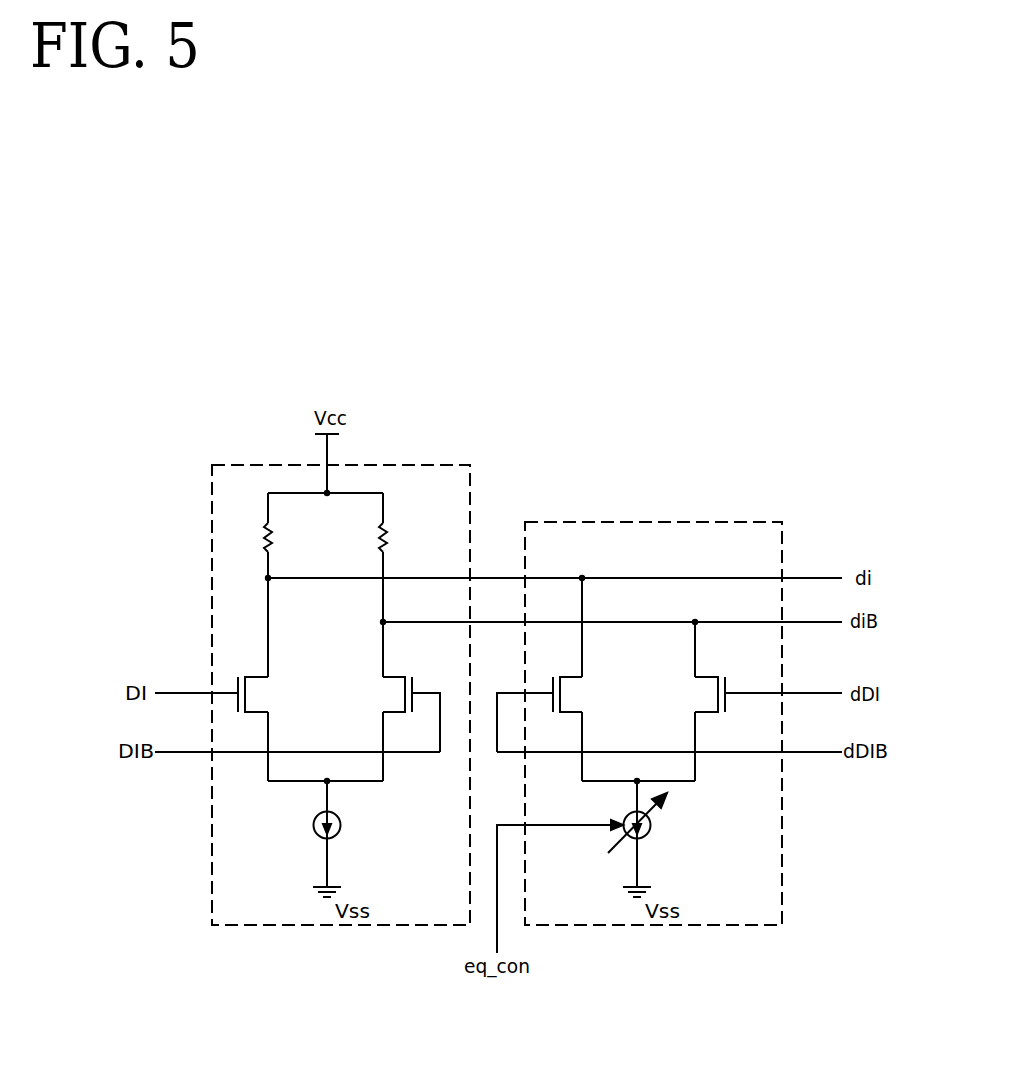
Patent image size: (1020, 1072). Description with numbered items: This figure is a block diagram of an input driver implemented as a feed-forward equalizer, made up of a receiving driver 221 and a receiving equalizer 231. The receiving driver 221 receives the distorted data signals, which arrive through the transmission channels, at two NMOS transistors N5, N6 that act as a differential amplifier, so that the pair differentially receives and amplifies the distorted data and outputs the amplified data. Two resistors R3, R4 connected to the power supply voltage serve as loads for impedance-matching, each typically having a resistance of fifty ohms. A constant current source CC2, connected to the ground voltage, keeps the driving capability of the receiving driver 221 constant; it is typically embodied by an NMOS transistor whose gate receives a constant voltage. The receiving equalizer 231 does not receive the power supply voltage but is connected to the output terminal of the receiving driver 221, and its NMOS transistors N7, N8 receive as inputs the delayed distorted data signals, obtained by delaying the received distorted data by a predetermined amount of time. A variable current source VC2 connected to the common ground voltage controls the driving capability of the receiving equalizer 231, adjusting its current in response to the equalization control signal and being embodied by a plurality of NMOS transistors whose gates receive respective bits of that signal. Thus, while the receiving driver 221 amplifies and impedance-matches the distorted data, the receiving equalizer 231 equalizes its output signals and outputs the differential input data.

The receiving driver 221 is at (342, 682).
The receiving equalizer 231 is at (640, 709).
The resistor R3 is at (253, 537).
The resistor R4 is at (399, 537).
The NMOS transistor N5 is at (257, 694).
The NMOS transistor N6 is at (407, 714).
The NMOS transistor N7 is at (543, 714).
The NMOS transistor N8 is at (706, 694).
The constant current source CC2 is at (350, 825).
The variable current source VC2 is at (653, 823).